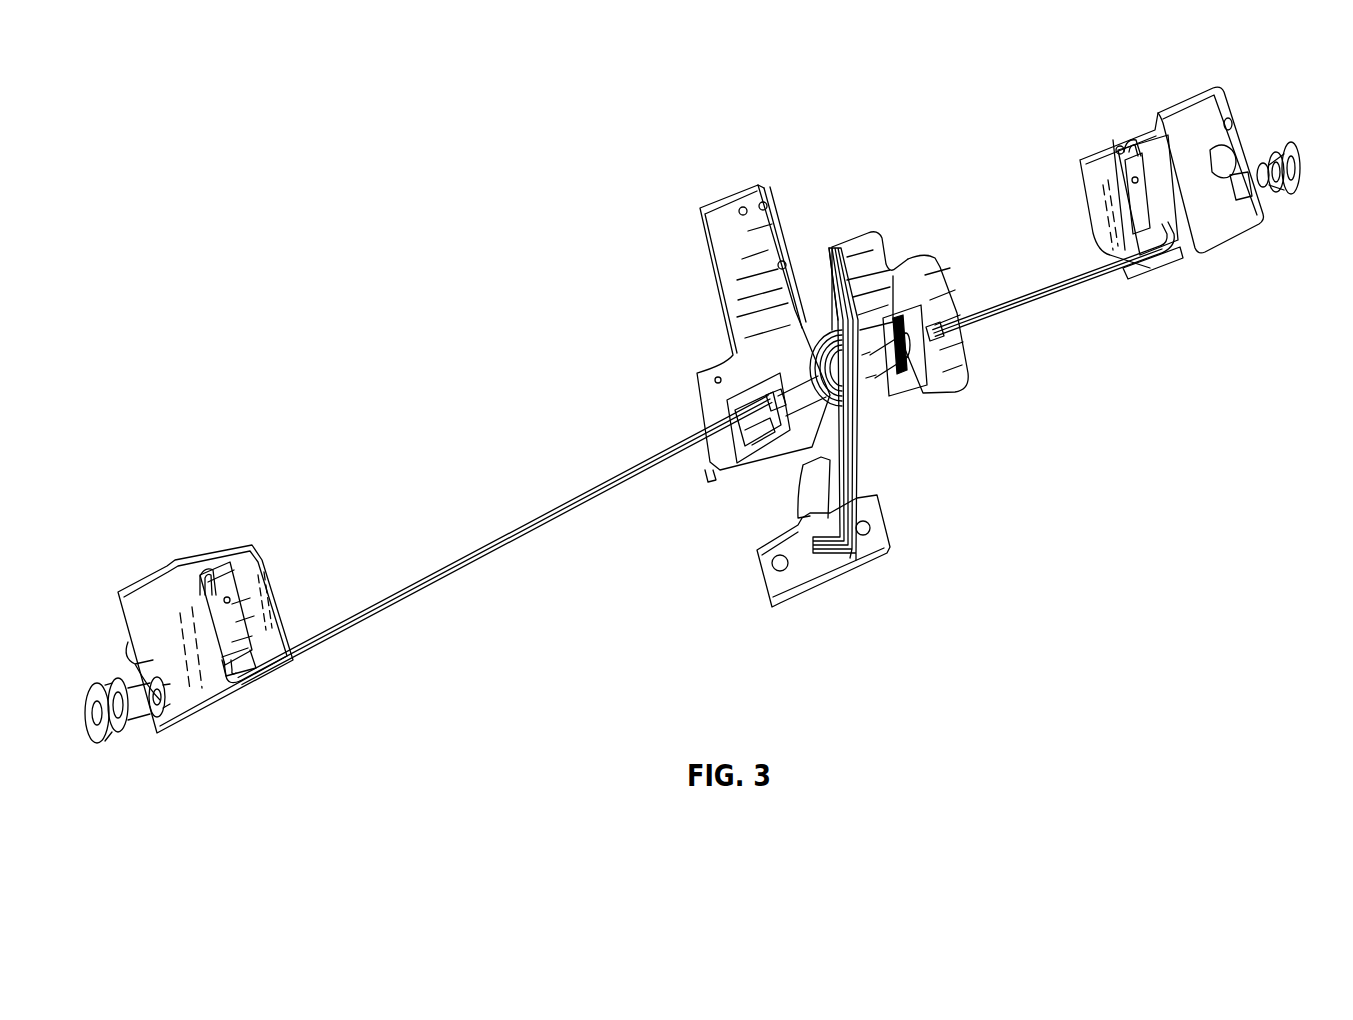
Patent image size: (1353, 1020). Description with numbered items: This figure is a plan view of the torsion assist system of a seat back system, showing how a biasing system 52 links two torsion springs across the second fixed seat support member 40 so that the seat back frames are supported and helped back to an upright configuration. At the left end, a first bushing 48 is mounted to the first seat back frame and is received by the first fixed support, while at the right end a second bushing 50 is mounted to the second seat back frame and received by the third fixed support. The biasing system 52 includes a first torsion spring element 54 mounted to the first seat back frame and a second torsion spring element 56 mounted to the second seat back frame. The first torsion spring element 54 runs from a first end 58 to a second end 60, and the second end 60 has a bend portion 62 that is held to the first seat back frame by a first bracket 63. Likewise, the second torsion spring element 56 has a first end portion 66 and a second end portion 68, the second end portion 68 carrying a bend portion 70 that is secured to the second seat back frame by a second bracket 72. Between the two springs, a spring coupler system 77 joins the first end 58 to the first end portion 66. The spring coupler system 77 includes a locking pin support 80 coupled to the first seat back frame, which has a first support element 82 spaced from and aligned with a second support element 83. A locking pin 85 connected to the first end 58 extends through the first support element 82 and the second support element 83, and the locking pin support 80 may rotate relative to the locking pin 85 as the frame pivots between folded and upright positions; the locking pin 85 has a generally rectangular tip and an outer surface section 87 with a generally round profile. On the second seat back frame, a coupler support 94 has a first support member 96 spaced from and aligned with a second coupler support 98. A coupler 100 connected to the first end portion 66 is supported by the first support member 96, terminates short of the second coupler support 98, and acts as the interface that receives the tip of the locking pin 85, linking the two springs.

The second fixed seat support member 40 is at (857, 487).
The first bushing 48 is at (112, 692).
The second bushing 50 is at (1300, 190).
The biasing system 52 is at (832, 312).
The first torsion spring element 54 is at (397, 607).
The second torsion spring element 56 is at (1046, 303).
The first end 58 is at (712, 443).
The second end 60 is at (283, 660).
The bend portion 62 is at (203, 590).
The first bracket 63 is at (238, 624).
The first end portion 66 is at (953, 343).
The second end portion 68 is at (1125, 276).
The bend portion 70 is at (1130, 150).
The second bracket 72 is at (1148, 198).
The spring coupler system 77 is at (975, 445).
The locking pin support 80 is at (723, 312).
The first support element 82 is at (770, 440).
The second support element 83 is at (813, 340).
The locking pin 85 is at (808, 297).
The outer surface section 87 is at (810, 442).
The coupler support 94 is at (848, 246).
The first support member 96 is at (892, 318).
The second coupler support 98 is at (826, 318).
The coupler 100 is at (892, 360).